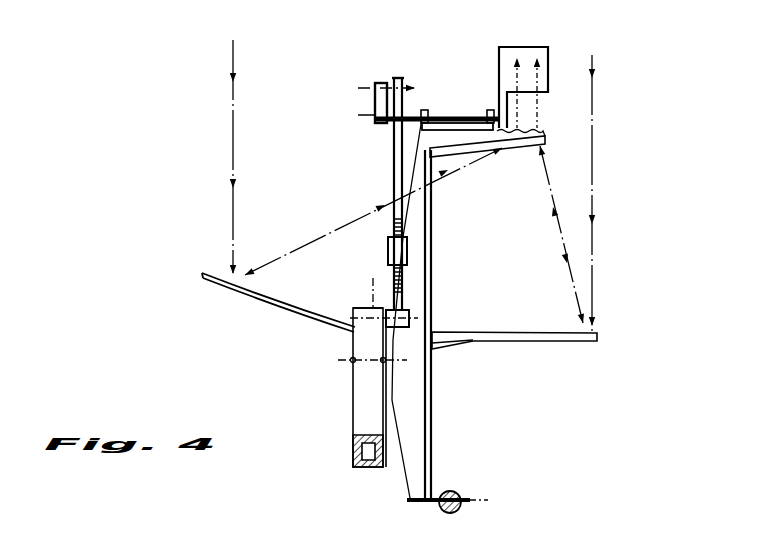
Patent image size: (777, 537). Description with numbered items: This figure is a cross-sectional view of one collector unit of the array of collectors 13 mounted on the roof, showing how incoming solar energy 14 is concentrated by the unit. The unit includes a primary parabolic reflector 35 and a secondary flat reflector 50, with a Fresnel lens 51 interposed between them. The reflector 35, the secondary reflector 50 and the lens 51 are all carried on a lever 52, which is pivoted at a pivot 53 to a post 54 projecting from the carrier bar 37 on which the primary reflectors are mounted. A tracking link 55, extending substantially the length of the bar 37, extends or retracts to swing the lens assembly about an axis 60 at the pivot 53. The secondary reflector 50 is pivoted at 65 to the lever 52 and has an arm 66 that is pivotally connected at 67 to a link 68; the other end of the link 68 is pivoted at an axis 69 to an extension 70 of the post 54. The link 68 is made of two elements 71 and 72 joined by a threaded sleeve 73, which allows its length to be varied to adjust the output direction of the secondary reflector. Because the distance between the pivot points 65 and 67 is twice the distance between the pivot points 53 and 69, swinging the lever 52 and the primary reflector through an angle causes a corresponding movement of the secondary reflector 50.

The collectors 13 is at (156, 298).
The solar energy 14 is at (233, 113).
The primary parabolic reflector 35 is at (478, 333).
The bar 37 is at (366, 468).
The secondary flat reflector 50 is at (521, 57).
The Fresnel lens 51 is at (545, 141).
The lever 52 is at (433, 406).
The pivot 53 is at (352, 362).
The post 54 is at (353, 445).
The tracking link 55 is at (456, 490).
The axis 60 is at (355, 388).
The pivot 65 is at (455, 111).
The arm 66 is at (375, 105).
The pivot 67 is at (387, 75).
The link 68 is at (388, 178).
The axis 69 is at (373, 278).
The extension 70 is at (356, 308).
The link element 71 is at (398, 162).
The link element 72 is at (407, 292).
The threaded sleeve 73 is at (398, 256).